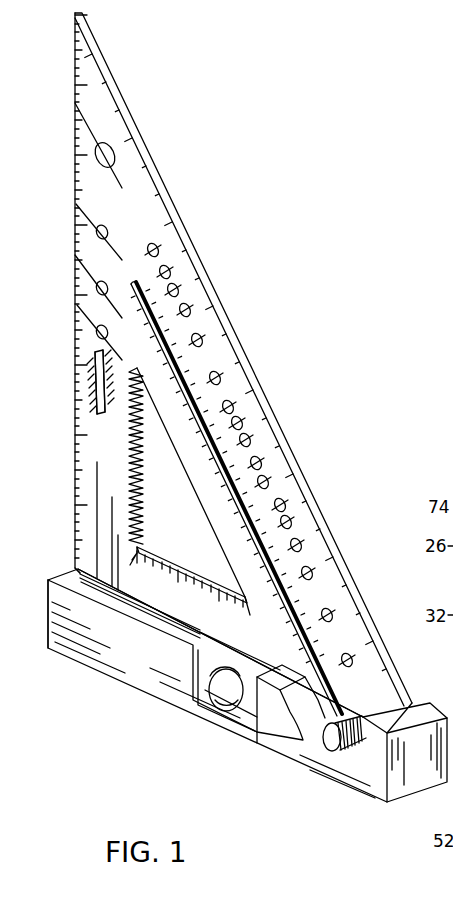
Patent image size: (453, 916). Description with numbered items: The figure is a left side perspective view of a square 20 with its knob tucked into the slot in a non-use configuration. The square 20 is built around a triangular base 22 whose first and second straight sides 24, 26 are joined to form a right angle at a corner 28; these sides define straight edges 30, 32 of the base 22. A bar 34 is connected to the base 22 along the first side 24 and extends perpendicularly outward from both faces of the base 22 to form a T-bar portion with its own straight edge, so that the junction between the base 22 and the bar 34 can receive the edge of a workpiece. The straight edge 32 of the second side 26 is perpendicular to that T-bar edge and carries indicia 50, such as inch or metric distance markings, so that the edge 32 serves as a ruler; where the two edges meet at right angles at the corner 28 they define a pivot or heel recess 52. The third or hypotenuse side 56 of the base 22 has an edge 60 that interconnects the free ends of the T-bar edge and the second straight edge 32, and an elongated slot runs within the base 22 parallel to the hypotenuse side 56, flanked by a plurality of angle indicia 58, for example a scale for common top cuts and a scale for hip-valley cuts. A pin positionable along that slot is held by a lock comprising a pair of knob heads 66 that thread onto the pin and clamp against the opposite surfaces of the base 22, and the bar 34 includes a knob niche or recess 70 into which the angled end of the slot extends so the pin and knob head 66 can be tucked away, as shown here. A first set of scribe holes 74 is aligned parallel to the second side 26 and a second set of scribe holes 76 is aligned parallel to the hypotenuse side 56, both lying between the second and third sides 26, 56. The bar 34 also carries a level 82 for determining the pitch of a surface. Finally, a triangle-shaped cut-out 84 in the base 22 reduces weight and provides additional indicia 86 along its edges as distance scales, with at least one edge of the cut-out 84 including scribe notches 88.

The square 20 is at (251, 180).
The triangular base 22 is at (235, 357).
The first straight side 24 is at (135, 604).
The second straight side 26 is at (75, 396).
The corner 28 is at (74, 572).
The straight edge 30 is at (192, 623).
The straight edge 32 is at (75, 452).
The bar 34 is at (123, 683).
The indicia 50 is at (88, 103).
The pivot or heel recess 52 is at (78, 568).
The hypotenuse side 56 is at (222, 303).
The angle indicia 58 is at (212, 397).
The edge 60 is at (153, 160).
The knob head 66 is at (332, 742).
The knob niche or recess 70 is at (295, 717).
The first set of scribe holes 74 is at (97, 235).
The second set of scribe holes 76 is at (178, 290).
The level 82 is at (233, 693).
The triangle-shaped cut-out 84 is at (170, 560).
The additional indicia 86 is at (242, 607).
The scribe notches 88 is at (143, 473).